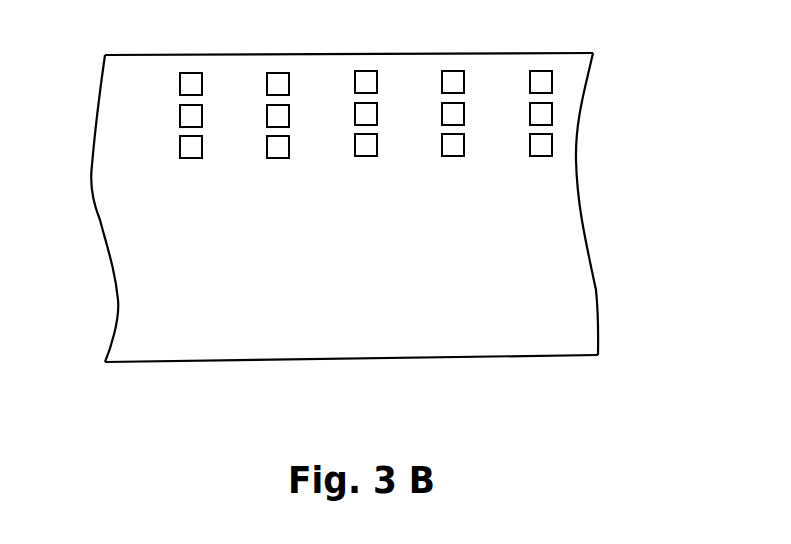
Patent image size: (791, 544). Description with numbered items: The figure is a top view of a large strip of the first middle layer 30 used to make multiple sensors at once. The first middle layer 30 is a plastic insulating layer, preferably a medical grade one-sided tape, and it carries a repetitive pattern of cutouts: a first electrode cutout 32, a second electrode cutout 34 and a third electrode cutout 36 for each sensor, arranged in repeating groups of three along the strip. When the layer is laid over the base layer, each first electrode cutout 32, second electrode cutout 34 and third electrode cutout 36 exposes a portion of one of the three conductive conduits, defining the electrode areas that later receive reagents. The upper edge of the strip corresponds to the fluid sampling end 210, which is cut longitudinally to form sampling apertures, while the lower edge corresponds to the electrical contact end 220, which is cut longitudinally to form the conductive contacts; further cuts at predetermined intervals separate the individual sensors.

The first middle layer 30 is at (442, 357).
The first electrode cutout 32 is at (366, 84).
The second electrode cutout 34 is at (452, 116).
The third electrode cutout 36 is at (366, 145).
The fluid sampling end 210 is at (215, 50).
The electrical contact end 220 is at (210, 367).